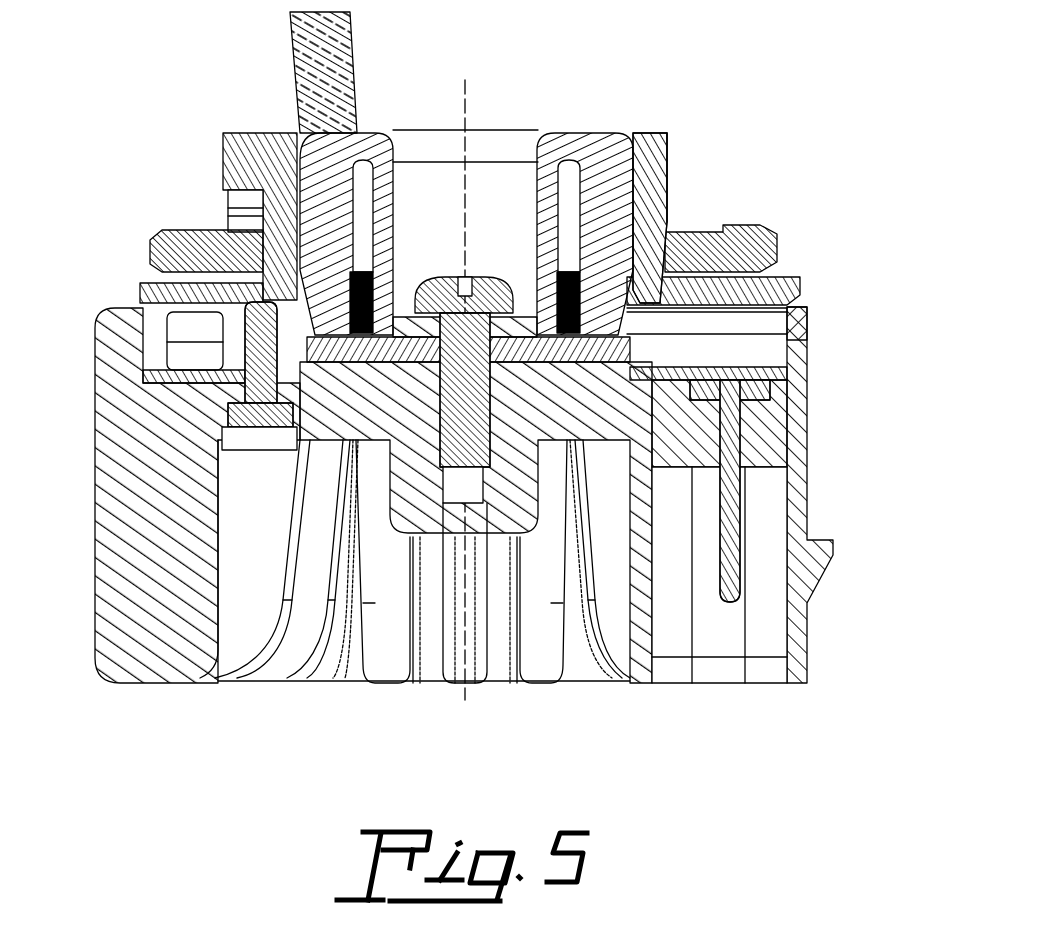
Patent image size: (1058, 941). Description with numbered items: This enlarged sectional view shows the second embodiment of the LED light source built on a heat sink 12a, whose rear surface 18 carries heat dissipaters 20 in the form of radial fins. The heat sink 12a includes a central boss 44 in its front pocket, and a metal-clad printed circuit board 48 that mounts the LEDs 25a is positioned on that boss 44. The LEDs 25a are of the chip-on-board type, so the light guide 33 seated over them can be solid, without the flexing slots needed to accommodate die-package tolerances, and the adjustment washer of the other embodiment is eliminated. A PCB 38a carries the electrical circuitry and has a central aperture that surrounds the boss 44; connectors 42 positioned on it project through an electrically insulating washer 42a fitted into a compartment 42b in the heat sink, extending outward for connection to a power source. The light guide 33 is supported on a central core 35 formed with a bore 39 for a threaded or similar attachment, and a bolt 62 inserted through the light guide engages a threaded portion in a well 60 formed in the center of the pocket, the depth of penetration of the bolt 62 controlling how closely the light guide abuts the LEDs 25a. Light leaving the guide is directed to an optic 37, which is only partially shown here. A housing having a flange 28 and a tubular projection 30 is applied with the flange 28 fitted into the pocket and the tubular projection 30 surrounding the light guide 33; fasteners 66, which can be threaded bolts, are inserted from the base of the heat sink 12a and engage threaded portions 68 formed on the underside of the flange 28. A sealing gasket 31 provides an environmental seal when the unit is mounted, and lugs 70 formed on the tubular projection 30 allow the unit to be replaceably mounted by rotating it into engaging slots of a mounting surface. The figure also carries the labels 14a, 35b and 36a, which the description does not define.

The heat sink 12a is at (833, 523).
The housing wall 14a is at (807, 360).
The rear surface 18 is at (222, 728).
The heat dissipaters 20 is at (103, 590).
The LEDs 25a is at (297, 433).
The flange 28 is at (780, 280).
The tubular projection 30 is at (667, 163).
The sealing gasket 31 is at (180, 233).
The light guide 33 is at (640, 196).
The central core 35 is at (545, 465).
The slot 35b is at (540, 230).
The clamping jaws 36a is at (357, 130).
The optic 37 is at (357, 53).
The PCB 38a is at (143, 374).
The bore 39 is at (500, 397).
The connectors 42 is at (737, 523).
The electrically insulating washer 42a is at (757, 410).
The compartment 42b is at (750, 437).
The central boss 44 is at (630, 360).
The metal-clad printed circuit board 48 is at (300, 338).
The well 60 is at (397, 527).
The bolt 62 is at (483, 277).
The fasteners 66 is at (235, 397).
The threaded portions 68 is at (140, 345).
The lugs 70 is at (223, 147).